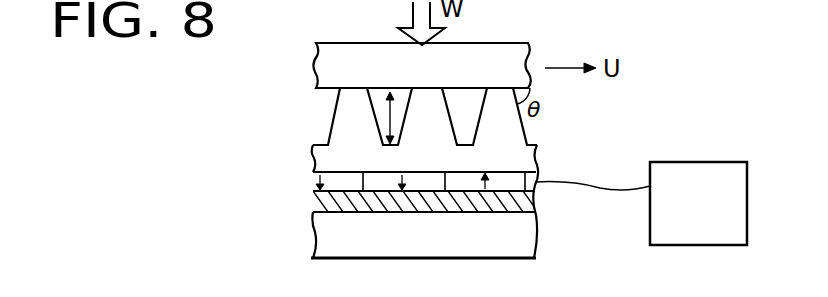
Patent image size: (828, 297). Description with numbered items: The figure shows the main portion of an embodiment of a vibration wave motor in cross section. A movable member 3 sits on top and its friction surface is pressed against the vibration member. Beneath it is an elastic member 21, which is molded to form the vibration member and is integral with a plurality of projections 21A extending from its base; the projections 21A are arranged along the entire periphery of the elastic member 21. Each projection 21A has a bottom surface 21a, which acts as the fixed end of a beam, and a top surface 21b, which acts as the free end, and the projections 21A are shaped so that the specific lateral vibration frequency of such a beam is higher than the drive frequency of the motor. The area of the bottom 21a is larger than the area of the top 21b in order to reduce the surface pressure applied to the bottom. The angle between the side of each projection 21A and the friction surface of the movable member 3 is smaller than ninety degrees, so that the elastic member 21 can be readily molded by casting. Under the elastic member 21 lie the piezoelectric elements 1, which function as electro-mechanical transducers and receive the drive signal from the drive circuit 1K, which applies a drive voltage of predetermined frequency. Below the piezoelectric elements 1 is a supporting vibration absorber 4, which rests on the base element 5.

The movable member 3 is at (332, 63).
The projections 21A is at (338, 128).
The top surface of projection 21b is at (430, 84).
The elastic member 21 is at (376, 156).
The piezoelectric element 1 is at (316, 183).
The bottom surface of projection 21a is at (514, 172).
The supporting vibration absorber 4 is at (525, 200).
The base element 5 is at (525, 237).
The drive circuit 1K is at (641, 203).